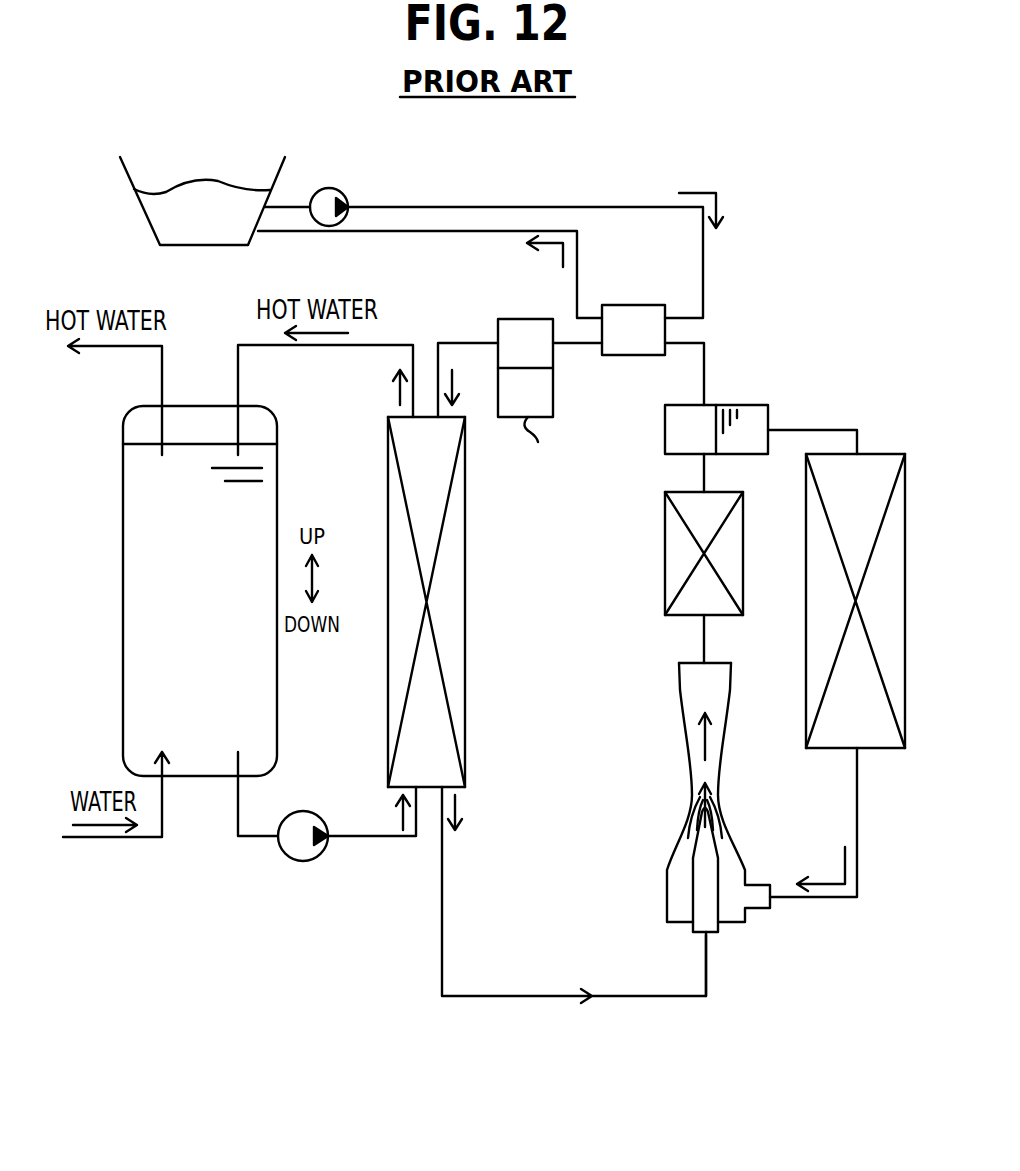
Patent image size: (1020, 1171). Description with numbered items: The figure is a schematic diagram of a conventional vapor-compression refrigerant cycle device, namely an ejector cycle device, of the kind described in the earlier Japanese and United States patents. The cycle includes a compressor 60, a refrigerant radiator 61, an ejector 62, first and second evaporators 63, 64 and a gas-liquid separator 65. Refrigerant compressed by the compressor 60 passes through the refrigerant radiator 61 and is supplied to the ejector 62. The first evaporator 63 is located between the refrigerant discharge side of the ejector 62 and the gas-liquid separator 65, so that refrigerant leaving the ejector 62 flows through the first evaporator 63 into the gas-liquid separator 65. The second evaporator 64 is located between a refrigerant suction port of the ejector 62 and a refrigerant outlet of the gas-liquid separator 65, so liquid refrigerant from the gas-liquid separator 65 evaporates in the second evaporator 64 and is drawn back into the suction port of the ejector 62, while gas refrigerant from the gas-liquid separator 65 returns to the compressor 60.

The compressor 60 is at (525, 319).
The refrigerant radiator 61 is at (465, 570).
The ejector 62 is at (655, 868).
The first evaporator 63 is at (665, 533).
The second evaporator 64 is at (806, 590).
The gas-liquid separator 65 is at (740, 405).